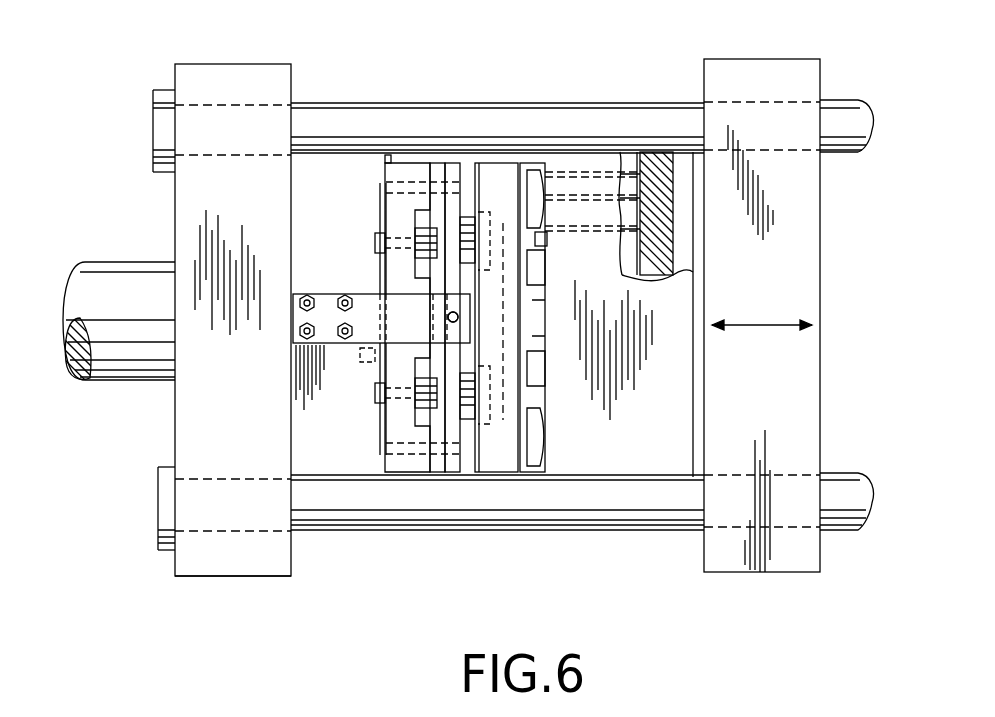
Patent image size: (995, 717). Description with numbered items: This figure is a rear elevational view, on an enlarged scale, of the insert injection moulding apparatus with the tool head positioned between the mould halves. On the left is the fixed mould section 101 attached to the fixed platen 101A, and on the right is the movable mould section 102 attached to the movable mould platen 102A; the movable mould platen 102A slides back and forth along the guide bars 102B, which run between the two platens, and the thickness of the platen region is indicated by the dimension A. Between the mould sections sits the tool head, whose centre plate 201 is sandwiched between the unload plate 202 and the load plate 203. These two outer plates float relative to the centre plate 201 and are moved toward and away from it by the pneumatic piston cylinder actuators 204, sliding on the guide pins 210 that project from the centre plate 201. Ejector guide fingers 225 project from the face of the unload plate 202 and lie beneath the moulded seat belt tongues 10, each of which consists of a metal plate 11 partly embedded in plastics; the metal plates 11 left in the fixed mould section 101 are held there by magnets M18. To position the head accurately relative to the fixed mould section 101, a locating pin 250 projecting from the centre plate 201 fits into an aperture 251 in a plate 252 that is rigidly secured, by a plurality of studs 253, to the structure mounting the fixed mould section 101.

The seat belt tongue 10 is at (543, 155).
The metal plate 11 is at (378, 184).
The fixed mould section 101 is at (312, 452).
The fixed platen 101A is at (238, 566).
The movable mould section 102 is at (650, 457).
The movable mould platen 102A is at (792, 548).
The guide bars 102B is at (684, 117).
The centre plate 201 is at (466, 168).
The unload plate 202 is at (528, 162).
The load plate 203 is at (395, 170).
The pneumatic piston cylinder actuators 204 is at (440, 205).
The guide pins 210 is at (430, 227).
The ejector guide fingers 225 is at (537, 238).
The locating pin 250 is at (453, 322).
The aperture 251 is at (452, 317).
The plate 252 is at (300, 312).
The studs 253 is at (305, 331).
The magnets M18 is at (360, 360).
The platen thickness dimension A is at (762, 343).